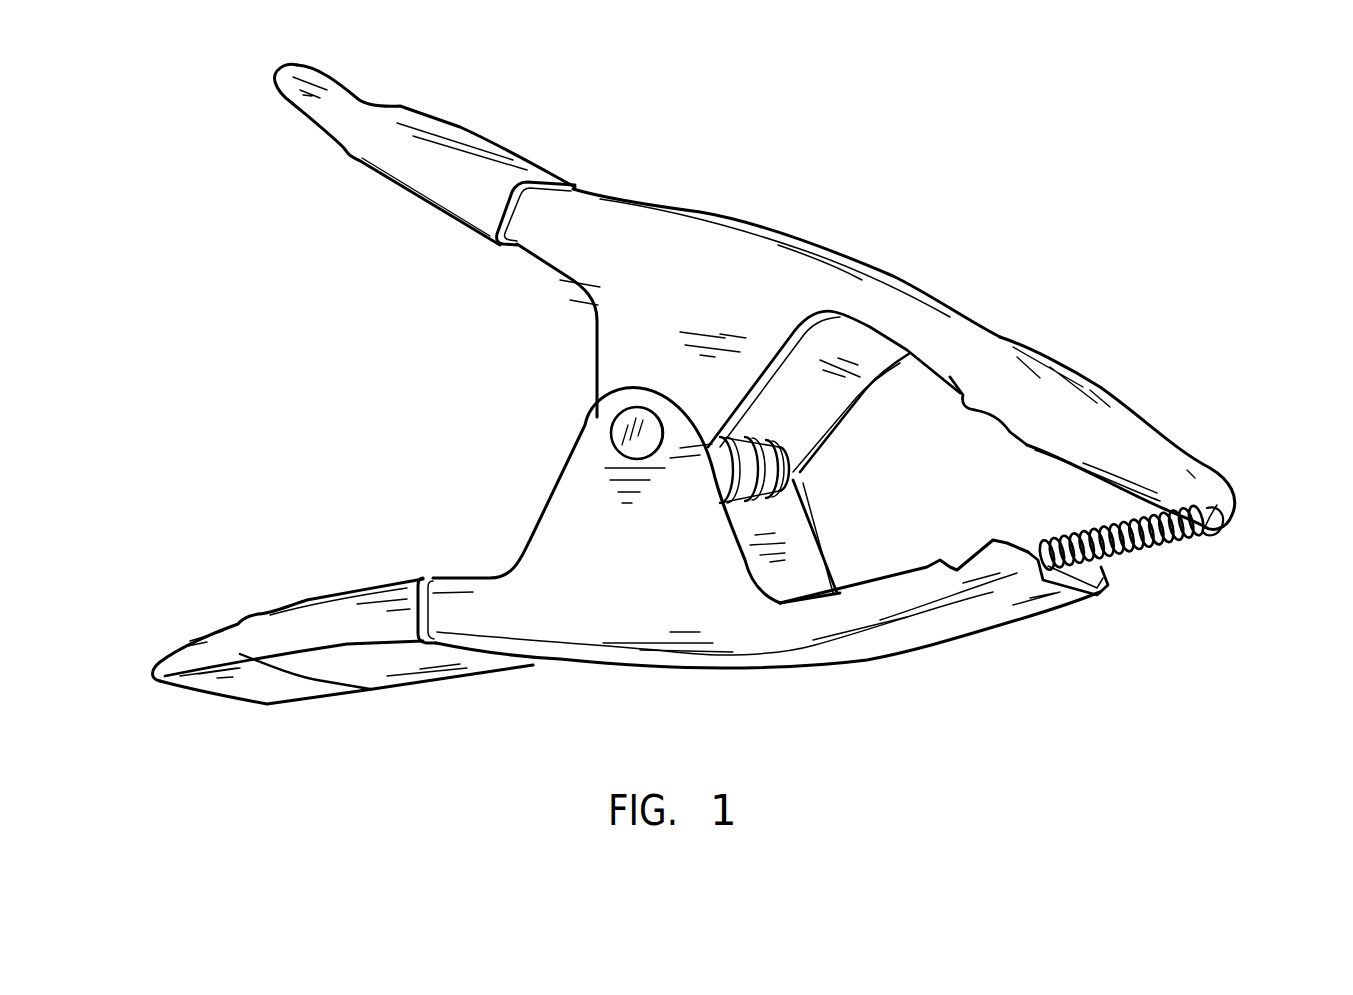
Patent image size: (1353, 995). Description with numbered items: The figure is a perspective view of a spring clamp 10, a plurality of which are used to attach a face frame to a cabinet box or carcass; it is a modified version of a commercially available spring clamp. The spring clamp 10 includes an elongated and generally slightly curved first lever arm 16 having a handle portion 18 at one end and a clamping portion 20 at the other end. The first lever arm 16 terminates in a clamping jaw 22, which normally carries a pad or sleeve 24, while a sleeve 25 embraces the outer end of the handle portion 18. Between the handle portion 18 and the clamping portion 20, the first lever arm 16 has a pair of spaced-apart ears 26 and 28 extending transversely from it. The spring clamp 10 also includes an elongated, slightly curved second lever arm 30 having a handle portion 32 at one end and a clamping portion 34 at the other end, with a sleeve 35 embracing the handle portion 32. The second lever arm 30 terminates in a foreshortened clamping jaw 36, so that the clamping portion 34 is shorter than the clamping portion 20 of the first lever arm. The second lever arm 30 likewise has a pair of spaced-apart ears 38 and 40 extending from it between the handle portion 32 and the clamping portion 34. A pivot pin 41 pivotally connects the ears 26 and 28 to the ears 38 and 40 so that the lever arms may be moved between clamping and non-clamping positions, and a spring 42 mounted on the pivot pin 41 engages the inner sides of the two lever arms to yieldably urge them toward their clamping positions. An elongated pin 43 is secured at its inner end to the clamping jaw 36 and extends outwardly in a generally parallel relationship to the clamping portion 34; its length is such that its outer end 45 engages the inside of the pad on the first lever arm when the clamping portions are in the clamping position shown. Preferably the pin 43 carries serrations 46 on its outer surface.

The spring clamp 10 is at (785, 212).
The first lever arm 16 is at (877, 265).
The handle portion 18 is at (532, 212).
The clamping portion 20 is at (980, 347).
The clamping jaw 22 is at (1224, 494).
The pad or sleeve 24 is at (1117, 440).
The sleeve 25 is at (415, 170).
The ear 26 is at (623, 333).
The ear 28 is at (815, 413).
The second lever arm 30 is at (862, 670).
The handle portion 32 is at (443, 590).
The clamping portion 34 is at (913, 637).
The sleeve 35 is at (337, 587).
The foreshortened clamping jaw 36 is at (1097, 590).
The ear 38 is at (642, 556).
The ear 40 is at (803, 540).
The pivot pin 41 is at (613, 432).
The spring 42 is at (771, 453).
The pin 43 is at (1095, 535).
The outer end 45 is at (1222, 532).
The serrations 46 is at (1147, 553).